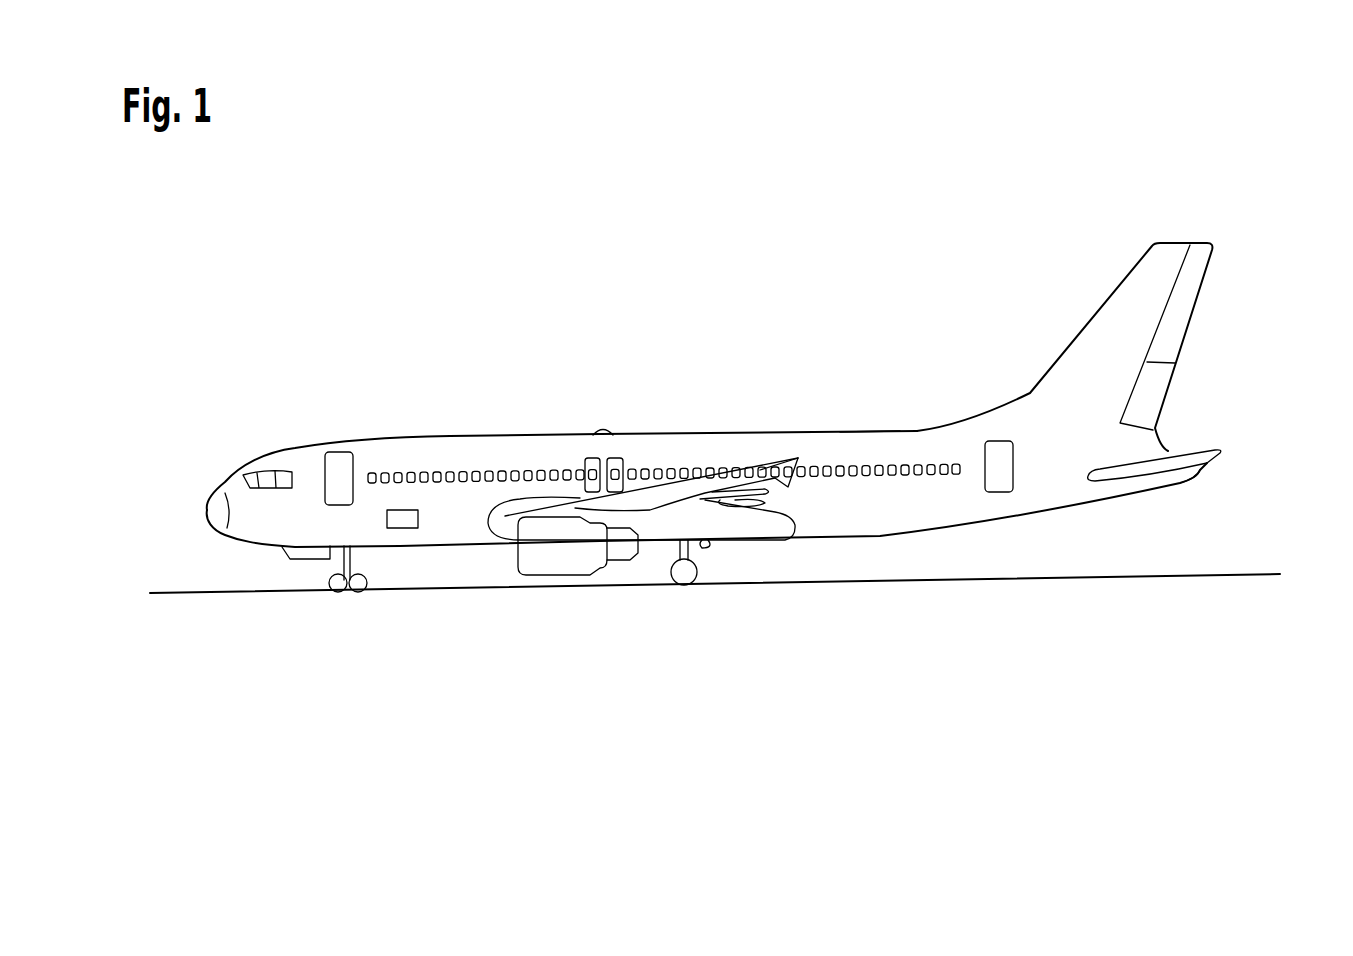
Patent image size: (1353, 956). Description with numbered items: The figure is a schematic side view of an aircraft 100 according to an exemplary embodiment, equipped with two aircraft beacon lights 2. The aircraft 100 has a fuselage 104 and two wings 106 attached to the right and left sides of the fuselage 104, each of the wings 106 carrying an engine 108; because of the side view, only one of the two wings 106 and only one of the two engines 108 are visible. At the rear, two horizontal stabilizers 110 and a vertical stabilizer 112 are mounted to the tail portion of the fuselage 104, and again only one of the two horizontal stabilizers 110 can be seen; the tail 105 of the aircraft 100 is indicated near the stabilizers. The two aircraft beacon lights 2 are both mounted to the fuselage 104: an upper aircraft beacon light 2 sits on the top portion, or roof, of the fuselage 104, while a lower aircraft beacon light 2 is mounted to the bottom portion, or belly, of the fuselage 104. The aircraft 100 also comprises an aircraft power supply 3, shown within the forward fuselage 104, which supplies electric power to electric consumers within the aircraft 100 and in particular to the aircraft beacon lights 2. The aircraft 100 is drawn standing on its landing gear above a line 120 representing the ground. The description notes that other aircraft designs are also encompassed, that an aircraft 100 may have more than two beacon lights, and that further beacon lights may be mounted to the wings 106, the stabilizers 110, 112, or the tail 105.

The aircraft 100 is at (560, 282).
The aircraft beacon light 2 is at (611, 428).
The aircraft power supply 3 is at (404, 519).
The fuselage 104 is at (862, 450).
The tail 105 is at (1212, 476).
The wing 106 is at (693, 495).
The engine 108 is at (560, 548).
The horizontal stabilizer 110 is at (1183, 457).
The vertical stabilizer 112 is at (1137, 280).
The ground 120 is at (990, 580).